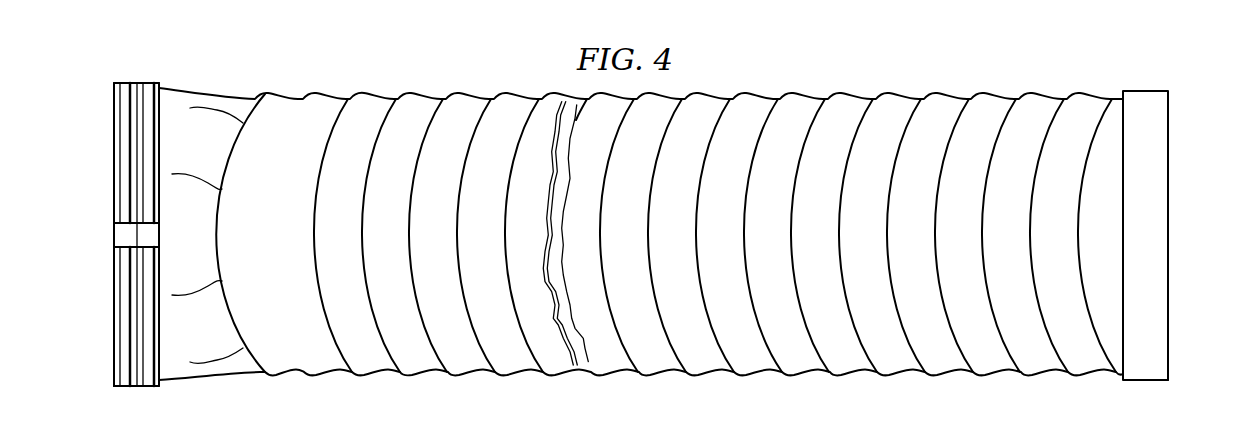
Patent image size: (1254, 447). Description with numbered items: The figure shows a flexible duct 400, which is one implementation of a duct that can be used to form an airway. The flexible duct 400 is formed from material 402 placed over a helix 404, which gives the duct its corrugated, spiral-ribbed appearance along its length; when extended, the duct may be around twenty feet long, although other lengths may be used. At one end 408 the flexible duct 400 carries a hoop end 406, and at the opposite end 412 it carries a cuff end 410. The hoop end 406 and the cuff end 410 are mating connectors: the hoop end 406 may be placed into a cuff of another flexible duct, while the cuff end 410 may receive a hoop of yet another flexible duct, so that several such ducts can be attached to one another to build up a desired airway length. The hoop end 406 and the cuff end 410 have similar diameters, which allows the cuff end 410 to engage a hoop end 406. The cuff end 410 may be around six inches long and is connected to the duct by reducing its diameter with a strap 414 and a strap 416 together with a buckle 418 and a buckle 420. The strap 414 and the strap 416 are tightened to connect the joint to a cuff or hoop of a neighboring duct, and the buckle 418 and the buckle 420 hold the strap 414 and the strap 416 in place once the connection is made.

The flexible duct 400 is at (766, 71).
The material 402 is at (316, 100).
The helix 404 is at (388, 118).
The hoop end 406 is at (1144, 90).
The end 408 is at (1174, 354).
The cuff end 410 is at (114, 149).
The end 412 is at (107, 325).
The strap 414 is at (124, 83).
The strap 416 is at (150, 387).
The buckle 418 is at (118, 232).
The buckle 420 is at (145, 239).